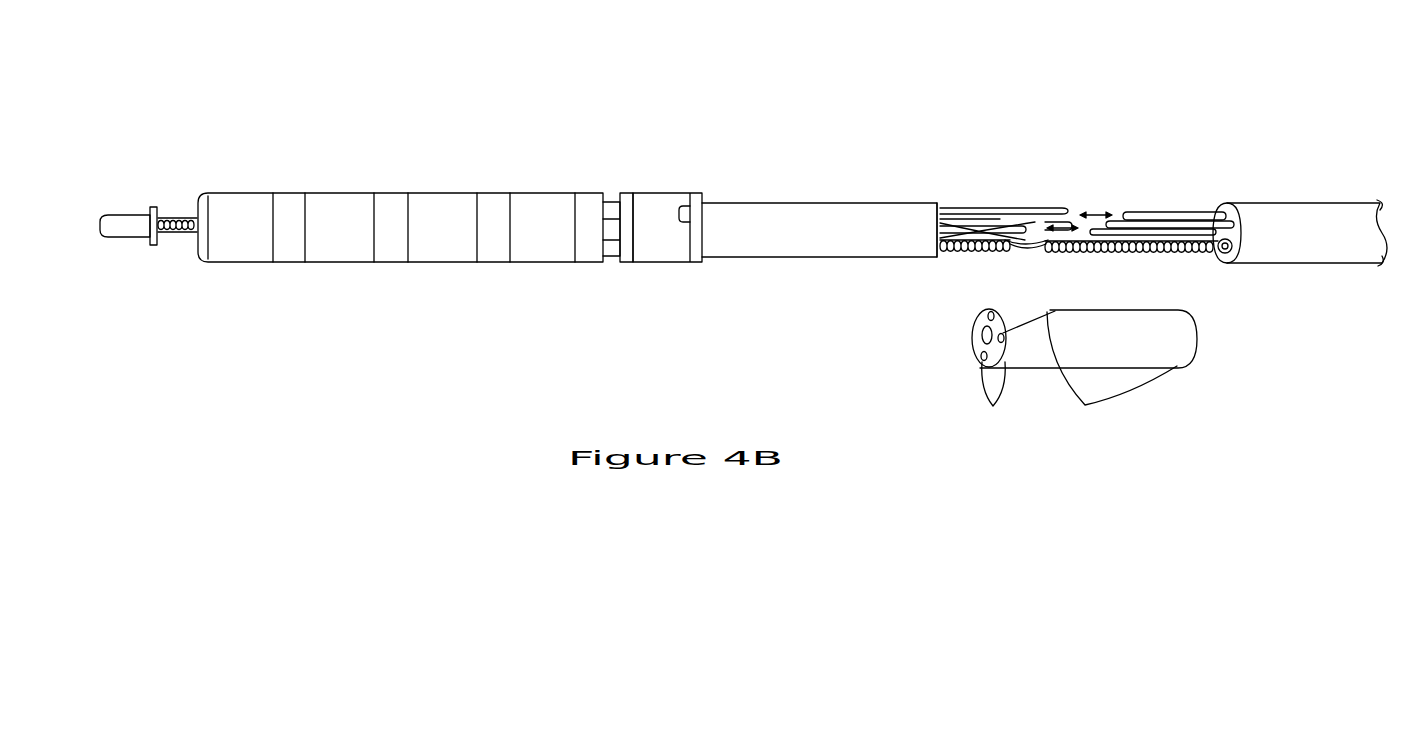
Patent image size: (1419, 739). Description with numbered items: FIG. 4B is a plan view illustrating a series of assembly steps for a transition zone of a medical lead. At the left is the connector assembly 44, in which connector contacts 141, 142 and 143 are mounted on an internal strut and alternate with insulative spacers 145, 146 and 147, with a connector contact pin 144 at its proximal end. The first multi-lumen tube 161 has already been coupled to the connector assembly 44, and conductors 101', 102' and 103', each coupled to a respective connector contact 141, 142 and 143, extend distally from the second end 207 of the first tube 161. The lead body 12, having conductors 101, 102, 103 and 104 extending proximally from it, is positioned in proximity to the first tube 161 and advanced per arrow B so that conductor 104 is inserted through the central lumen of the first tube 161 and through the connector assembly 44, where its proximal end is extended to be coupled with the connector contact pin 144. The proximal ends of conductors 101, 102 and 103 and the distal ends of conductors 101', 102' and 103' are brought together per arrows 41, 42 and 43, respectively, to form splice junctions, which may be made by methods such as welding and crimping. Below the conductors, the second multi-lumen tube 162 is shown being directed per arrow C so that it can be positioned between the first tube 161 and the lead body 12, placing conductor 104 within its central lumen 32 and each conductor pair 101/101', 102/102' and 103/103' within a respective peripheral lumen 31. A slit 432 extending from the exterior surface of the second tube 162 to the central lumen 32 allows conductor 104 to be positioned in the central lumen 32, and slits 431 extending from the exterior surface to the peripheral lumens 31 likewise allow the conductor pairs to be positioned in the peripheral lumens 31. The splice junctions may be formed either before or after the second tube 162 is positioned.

The lead body 12 is at (1330, 215).
The peripheral lumens 31 is at (977, 318).
The central lumen 32 is at (975, 335).
The arrow 41 is at (1098, 205).
The arrow 42 is at (1062, 212).
The arrow 43 is at (1075, 248).
The connector assembly 44 is at (688, 80).
The conductor 101 is at (1174, 190).
The conductor 101' is at (1004, 188).
The conductor 102 is at (1170, 194).
The conductor 102' is at (987, 201).
The conductor 103 is at (1153, 256).
The conductor 103' is at (983, 254).
The conductor 104 is at (185, 218).
The connector contact 141 is at (497, 195).
The connector contact 142 is at (402, 195).
The connector contact 143 is at (303, 195).
The connector contact pin 144 is at (133, 227).
The insulative spacer 145 is at (443, 258).
The insulative spacer 146 is at (345, 258).
The insulative spacer 147 is at (253, 258).
The first multi-lumen tube 161 is at (747, 218).
The second multi-lumen tube 162 is at (1185, 330).
The second end 207 is at (940, 200).
The slits 431 is at (1112, 374).
The slit 432 is at (1000, 312).